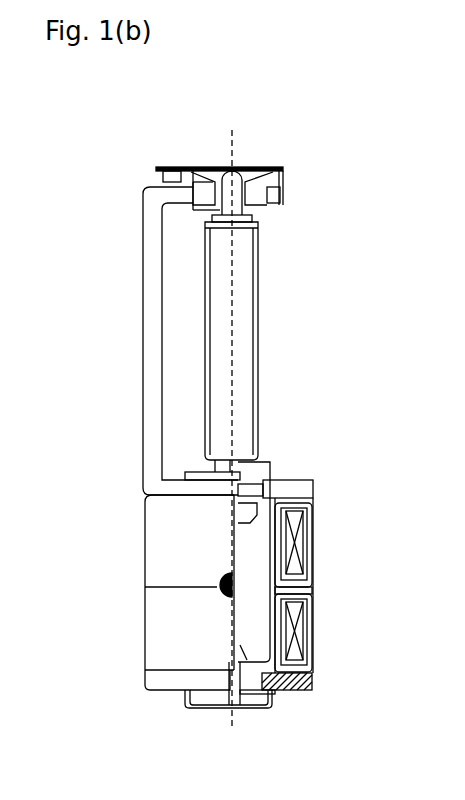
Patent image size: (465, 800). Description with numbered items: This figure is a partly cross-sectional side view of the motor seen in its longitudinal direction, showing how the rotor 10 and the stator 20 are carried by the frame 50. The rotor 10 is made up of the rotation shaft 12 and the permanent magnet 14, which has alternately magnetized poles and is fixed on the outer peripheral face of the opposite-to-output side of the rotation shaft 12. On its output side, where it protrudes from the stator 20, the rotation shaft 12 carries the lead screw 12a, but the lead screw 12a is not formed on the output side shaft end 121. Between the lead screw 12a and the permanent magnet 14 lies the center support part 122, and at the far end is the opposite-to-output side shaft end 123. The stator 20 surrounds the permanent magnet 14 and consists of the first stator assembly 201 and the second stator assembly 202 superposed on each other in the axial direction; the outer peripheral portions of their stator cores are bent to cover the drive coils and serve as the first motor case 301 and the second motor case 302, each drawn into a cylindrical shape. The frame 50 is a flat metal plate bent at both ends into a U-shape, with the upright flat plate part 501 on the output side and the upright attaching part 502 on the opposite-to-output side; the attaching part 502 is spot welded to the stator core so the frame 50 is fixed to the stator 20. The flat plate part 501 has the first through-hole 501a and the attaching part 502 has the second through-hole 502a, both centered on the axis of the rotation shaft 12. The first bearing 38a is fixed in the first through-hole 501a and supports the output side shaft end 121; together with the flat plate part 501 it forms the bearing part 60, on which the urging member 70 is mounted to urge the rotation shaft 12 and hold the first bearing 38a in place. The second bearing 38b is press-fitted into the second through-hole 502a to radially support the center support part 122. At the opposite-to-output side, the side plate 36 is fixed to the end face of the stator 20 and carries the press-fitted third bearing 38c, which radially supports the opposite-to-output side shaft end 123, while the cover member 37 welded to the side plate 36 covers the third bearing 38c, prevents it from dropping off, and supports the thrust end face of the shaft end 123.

The rotor 10 is at (235, 456).
The rotation shaft 12 is at (279, 341).
The lead screw 12a is at (254, 330).
The permanent magnet 14 is at (273, 483).
The stator 20 is at (351, 585).
The side plate 36 is at (312, 687).
The cover member 37 is at (199, 708).
The first bearing 38a is at (190, 203).
The second bearing 38b is at (253, 480).
The third bearing 38c is at (273, 693).
The frame 50 is at (213, 461).
The bearing part 60 is at (289, 172).
The urging member 70 is at (280, 190).
The output side shaft end 121 is at (238, 196).
The center support part 122 is at (217, 463).
The opposite-to-output side shaft end 123 is at (240, 700).
The first stator assembly 201 is at (317, 561).
The second stator assembly 202 is at (317, 614).
The first motor case 301 is at (155, 553).
The second motor case 302 is at (155, 632).
The flat plate part 501 is at (193, 161).
The first through-hole 501a is at (186, 176).
The attaching part 502 is at (240, 506).
The second through-hole 502a is at (232, 492).